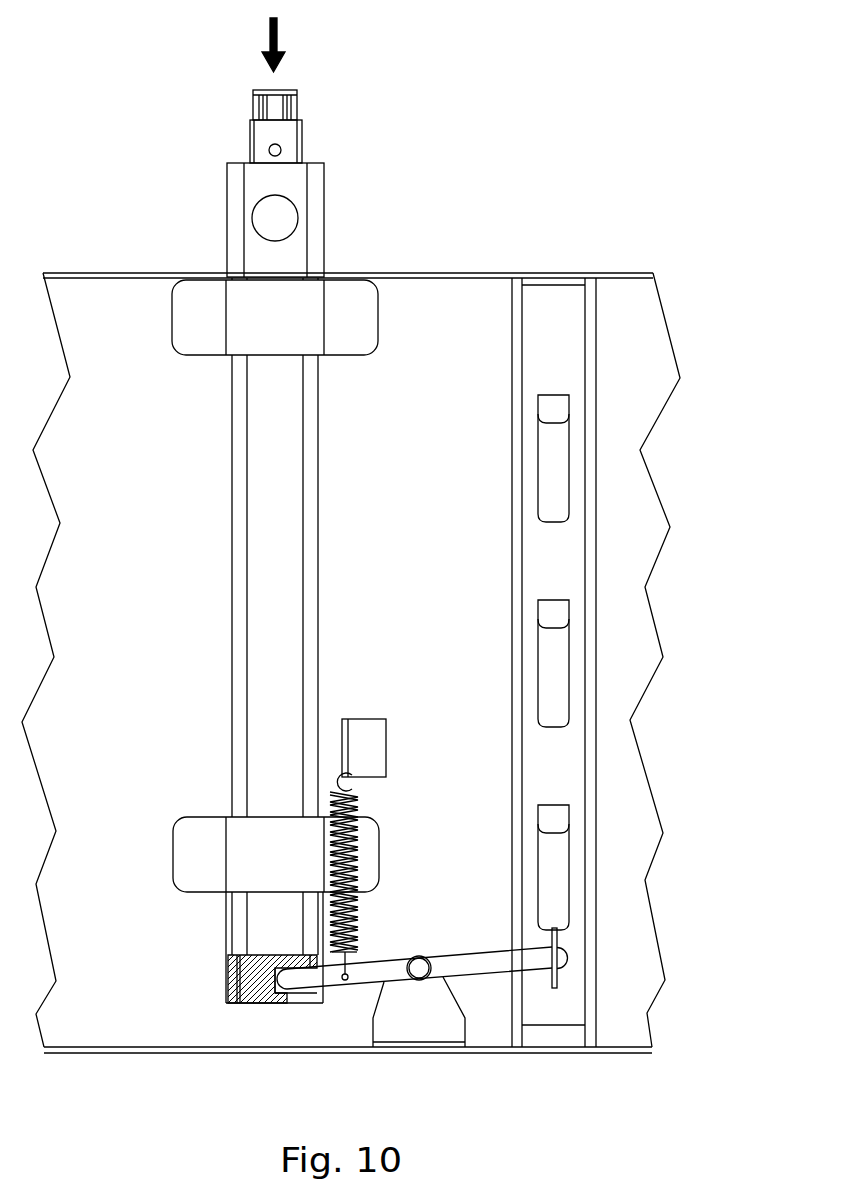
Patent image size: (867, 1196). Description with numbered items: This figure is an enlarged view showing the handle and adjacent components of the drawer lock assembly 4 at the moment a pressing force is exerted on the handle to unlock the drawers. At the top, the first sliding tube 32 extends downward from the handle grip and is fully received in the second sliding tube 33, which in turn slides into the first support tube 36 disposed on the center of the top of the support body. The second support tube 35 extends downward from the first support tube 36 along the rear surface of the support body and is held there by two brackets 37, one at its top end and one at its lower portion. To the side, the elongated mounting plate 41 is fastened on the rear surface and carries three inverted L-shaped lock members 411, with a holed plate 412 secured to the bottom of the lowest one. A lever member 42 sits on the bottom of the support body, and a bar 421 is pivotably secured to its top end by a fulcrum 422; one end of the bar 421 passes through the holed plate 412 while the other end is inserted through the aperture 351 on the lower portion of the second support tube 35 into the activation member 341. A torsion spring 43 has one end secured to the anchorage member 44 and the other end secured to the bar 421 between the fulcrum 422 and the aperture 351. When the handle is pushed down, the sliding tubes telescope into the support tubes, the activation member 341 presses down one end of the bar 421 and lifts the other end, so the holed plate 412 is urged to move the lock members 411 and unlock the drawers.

The first sliding tube 32 is at (265, 106).
The second sliding tube 33 is at (258, 144).
The first support tube 36 is at (299, 192).
The bracket 37 is at (217, 330).
The second support tube 35 is at (257, 470).
The mounting plate 41 is at (570, 352).
The lock member 411 is at (550, 612).
The drawer lock assembly 4 is at (610, 500).
The anchorage member 44 is at (363, 750).
The torsion spring 43 is at (355, 810).
The aperture 351 is at (307, 952).
The activation member 341 is at (250, 978).
The fulcrum 422 is at (415, 960).
The bar 421 is at (455, 967).
The holed plate 412 is at (557, 980).
The lever member 42 is at (443, 1020).